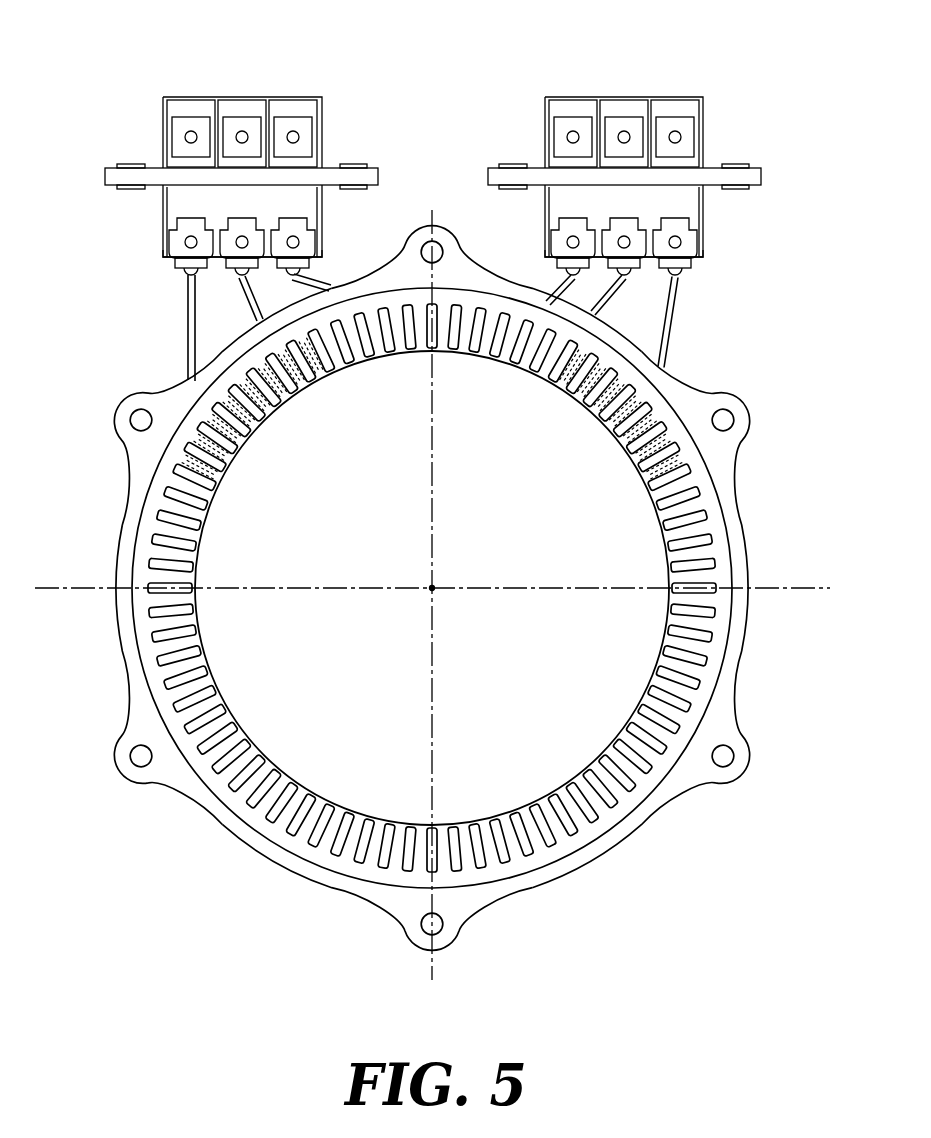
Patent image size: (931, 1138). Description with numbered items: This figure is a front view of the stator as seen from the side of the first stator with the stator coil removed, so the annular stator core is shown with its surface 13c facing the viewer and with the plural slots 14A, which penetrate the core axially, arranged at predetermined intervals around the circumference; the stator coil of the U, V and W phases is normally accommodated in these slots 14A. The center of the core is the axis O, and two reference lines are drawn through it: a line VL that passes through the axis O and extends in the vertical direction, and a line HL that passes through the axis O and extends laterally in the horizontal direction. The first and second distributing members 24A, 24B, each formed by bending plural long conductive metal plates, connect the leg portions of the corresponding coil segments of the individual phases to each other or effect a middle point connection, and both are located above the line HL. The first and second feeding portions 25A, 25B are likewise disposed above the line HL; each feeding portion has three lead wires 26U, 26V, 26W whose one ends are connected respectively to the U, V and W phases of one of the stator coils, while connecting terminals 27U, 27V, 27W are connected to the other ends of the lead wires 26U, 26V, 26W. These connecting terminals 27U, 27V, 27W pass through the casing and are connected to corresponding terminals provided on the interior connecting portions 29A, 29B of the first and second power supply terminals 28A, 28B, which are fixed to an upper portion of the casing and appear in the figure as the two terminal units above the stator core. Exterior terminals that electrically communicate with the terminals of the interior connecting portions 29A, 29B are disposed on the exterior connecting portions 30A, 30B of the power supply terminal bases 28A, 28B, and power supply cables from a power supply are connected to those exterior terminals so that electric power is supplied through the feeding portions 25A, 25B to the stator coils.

The surface of stator core 13c is at (657, 772).
The slots 14A is at (595, 778).
The first distributing member 24A is at (190, 455).
The second distributing member 24B is at (677, 452).
The first feeding portion 25A is at (155, 258).
The second feeding portion 25B is at (710, 260).
The lead wire 26U is at (193, 347).
The lead wire 26V is at (255, 313).
The lead wire 26W is at (305, 286).
The connecting terminal 27U is at (190, 226).
The connecting terminal 27V is at (243, 226).
The connecting terminal 27W is at (295, 226).
The first power supply terminal 28A is at (178, 90).
The second power supply terminal 28B is at (673, 88).
The interior connecting portion 29A is at (160, 205).
The interior connecting portion 29B is at (690, 205).
The exterior connecting portion 30A is at (190, 105).
The exterior connecting portion 30B is at (573, 103).
The axis O is at (432, 588).
The line HL is at (808, 590).
The line VL is at (435, 965).